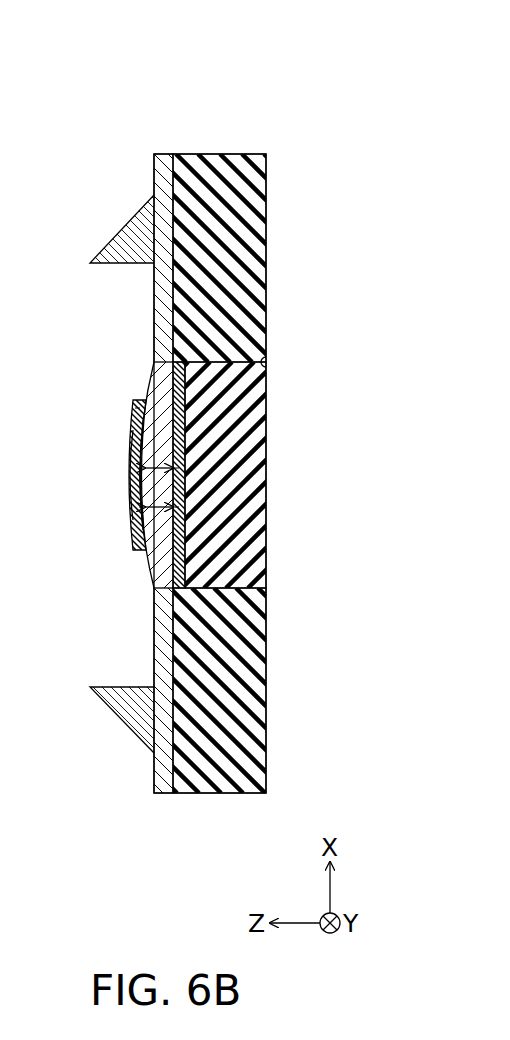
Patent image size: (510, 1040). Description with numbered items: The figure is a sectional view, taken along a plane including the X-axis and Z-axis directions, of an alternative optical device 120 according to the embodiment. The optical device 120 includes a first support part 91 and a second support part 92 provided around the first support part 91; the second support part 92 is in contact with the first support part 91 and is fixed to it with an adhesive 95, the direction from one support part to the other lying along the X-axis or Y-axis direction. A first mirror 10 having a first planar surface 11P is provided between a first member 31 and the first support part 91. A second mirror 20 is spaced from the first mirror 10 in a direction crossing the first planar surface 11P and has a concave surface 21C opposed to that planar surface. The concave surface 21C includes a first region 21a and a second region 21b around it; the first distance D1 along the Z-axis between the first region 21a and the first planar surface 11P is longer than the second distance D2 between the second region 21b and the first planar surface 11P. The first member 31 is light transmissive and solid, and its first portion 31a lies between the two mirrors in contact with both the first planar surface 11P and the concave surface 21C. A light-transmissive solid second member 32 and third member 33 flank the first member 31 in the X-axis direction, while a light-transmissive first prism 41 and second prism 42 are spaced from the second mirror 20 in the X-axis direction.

The optical device 120 is at (250, 93).
The second support part 92 is at (232, 270).
The first support part 91 is at (235, 415).
The adhesive 95 is at (272, 361).
The first mirror 10 is at (183, 377).
The first planar surface 11P is at (170, 393).
The second member 32 is at (163, 310).
The third member 33 is at (168, 638).
The first member 31 is at (153, 563).
The first portion 31a is at (160, 528).
The second mirror 20 is at (128, 445).
The concave surface 21C is at (134, 416).
The first region 21a is at (138, 472).
The second region 21b is at (137, 508).
The first distance D1 is at (165, 462).
The second distance D2 is at (165, 500).
The first prism 41 is at (128, 238).
The second prism 42 is at (122, 708).